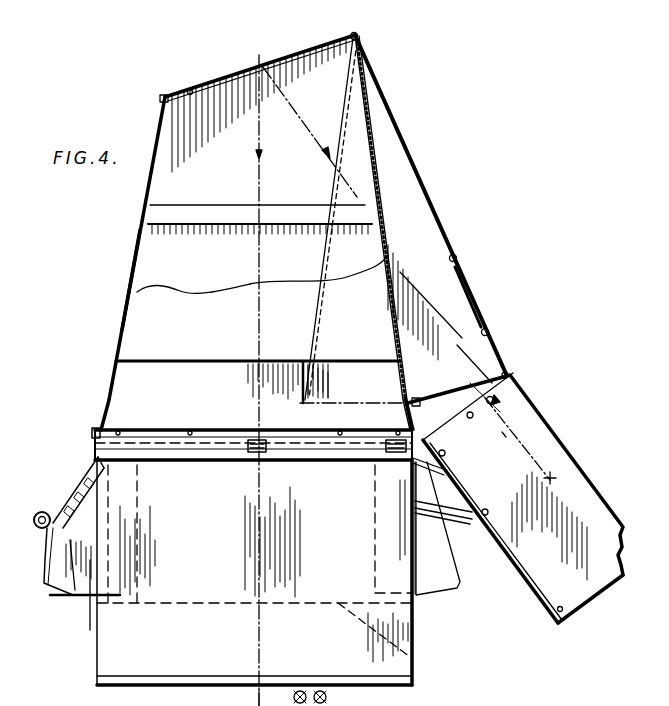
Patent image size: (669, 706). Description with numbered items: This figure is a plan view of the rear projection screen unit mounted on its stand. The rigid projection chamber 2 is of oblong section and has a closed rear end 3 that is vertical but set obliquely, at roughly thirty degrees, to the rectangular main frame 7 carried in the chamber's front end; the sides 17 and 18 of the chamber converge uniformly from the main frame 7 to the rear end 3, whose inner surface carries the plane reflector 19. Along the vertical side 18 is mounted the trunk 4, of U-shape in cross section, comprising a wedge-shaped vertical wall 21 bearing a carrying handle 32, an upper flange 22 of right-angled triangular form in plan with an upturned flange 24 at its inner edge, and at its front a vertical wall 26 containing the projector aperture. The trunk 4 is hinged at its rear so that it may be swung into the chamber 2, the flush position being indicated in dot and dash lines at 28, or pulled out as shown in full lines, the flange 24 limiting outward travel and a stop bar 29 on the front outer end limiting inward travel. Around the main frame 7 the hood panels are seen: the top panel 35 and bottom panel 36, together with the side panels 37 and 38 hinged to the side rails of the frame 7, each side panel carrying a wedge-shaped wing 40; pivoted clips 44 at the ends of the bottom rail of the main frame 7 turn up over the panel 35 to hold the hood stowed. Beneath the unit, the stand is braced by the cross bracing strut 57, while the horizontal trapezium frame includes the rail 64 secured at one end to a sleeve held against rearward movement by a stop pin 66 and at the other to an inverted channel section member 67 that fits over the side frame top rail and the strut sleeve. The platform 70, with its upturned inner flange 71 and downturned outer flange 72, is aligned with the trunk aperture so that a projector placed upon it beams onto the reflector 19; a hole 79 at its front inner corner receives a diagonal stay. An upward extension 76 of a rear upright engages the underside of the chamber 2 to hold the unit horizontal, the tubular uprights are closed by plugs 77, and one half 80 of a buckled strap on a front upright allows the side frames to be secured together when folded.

The projection chamber 2 is at (160, 267).
The rear end 3 is at (262, 62).
The trunk 4 is at (406, 154).
The main frame 7 is at (104, 428).
The side of the chamber 17 is at (122, 341).
The side of the chamber 18 is at (385, 355).
The reflector 19 is at (193, 88).
The vertical wall 21 is at (490, 368).
The upper flange 22 is at (397, 190).
The upturned flange 24 is at (360, 103).
The vertical wall 26 is at (412, 404).
The inner position of trunk 28 is at (312, 352).
The stop bar 29 is at (493, 382).
The carrying handle 32 is at (470, 291).
The top panel 35 is at (348, 521).
The bottom panel 36 is at (413, 658).
The side panel 37 is at (88, 598).
The side panel 38 is at (445, 556).
The wing 40 is at (428, 606).
The pivoted clip 44 is at (92, 446).
The cross bracing strut 57 is at (85, 480).
The rail 64 is at (467, 523).
The stop pin 66 is at (495, 399).
The inverted channel section member 67 is at (85, 494).
The platform 70 is at (600, 575).
The upturned flange 71 is at (523, 583).
The downturned flange 72 is at (556, 432).
The upward extension 76 is at (294, 697).
The plug 77 is at (42, 512).
The hole 79 is at (555, 620).
The strap half 80 is at (47, 584).